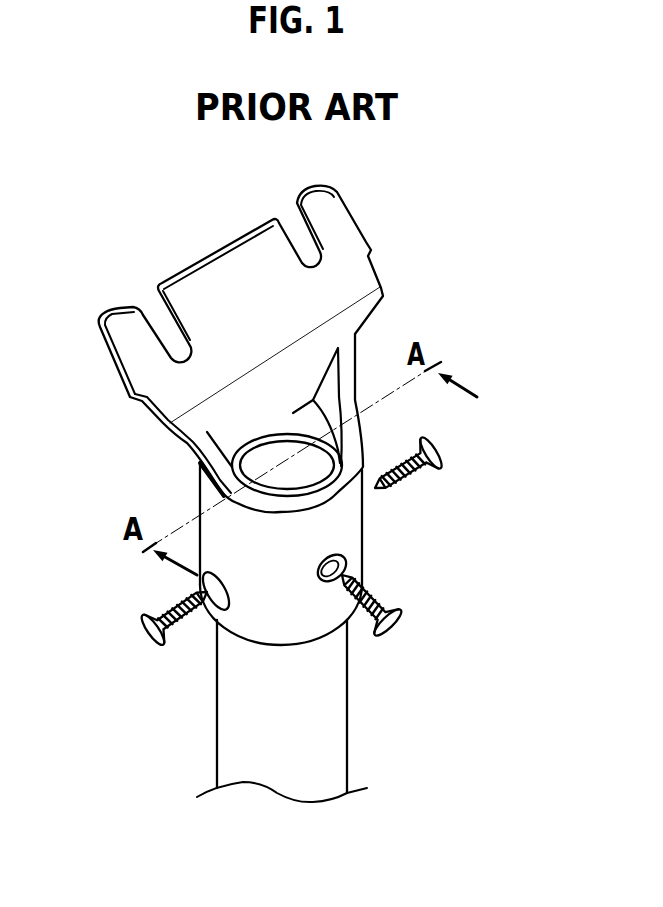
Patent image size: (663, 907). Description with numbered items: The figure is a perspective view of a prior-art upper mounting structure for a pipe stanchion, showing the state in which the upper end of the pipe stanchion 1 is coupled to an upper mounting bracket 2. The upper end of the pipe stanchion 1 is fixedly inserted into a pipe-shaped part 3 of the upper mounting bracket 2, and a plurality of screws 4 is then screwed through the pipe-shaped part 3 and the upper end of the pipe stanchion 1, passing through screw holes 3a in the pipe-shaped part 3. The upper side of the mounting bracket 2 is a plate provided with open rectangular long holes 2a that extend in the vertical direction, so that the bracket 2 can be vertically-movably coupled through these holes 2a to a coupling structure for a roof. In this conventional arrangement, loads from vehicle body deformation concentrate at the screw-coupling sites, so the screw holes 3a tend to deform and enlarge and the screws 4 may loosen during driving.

The pipe stanchion 1 is at (323, 733).
The upper mounting bracket 2 is at (413, 316).
The open rectangular long holes 2a is at (150, 322).
The pipe-shaped part 3 is at (340, 533).
The screw holes 3a is at (203, 588).
The screws 4 is at (437, 460).